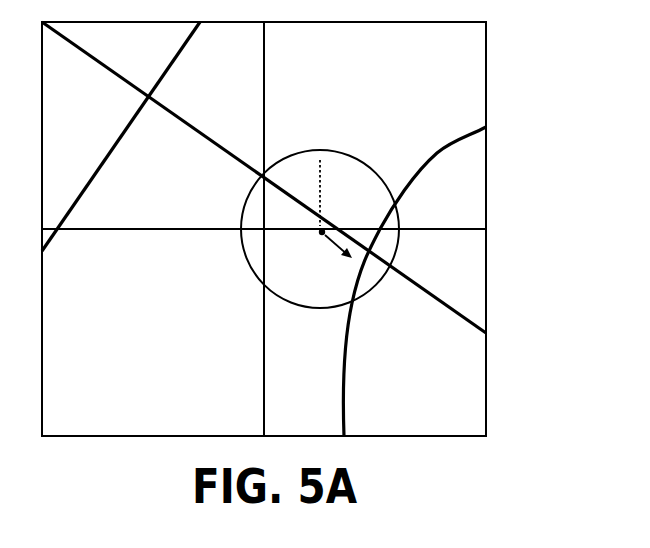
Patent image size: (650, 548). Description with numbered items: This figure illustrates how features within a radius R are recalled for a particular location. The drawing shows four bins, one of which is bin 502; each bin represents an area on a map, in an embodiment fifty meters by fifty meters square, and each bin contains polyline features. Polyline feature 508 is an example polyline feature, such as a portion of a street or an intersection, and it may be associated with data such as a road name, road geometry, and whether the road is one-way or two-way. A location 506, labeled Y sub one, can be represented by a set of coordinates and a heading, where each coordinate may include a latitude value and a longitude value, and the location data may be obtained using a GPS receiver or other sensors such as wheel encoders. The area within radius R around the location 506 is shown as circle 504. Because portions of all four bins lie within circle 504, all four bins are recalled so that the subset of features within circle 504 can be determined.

The bin 502 is at (486, 62).
The circle 504 is at (343, 152).
The location 506 is at (337, 233).
The polyline feature 508 is at (453, 143).